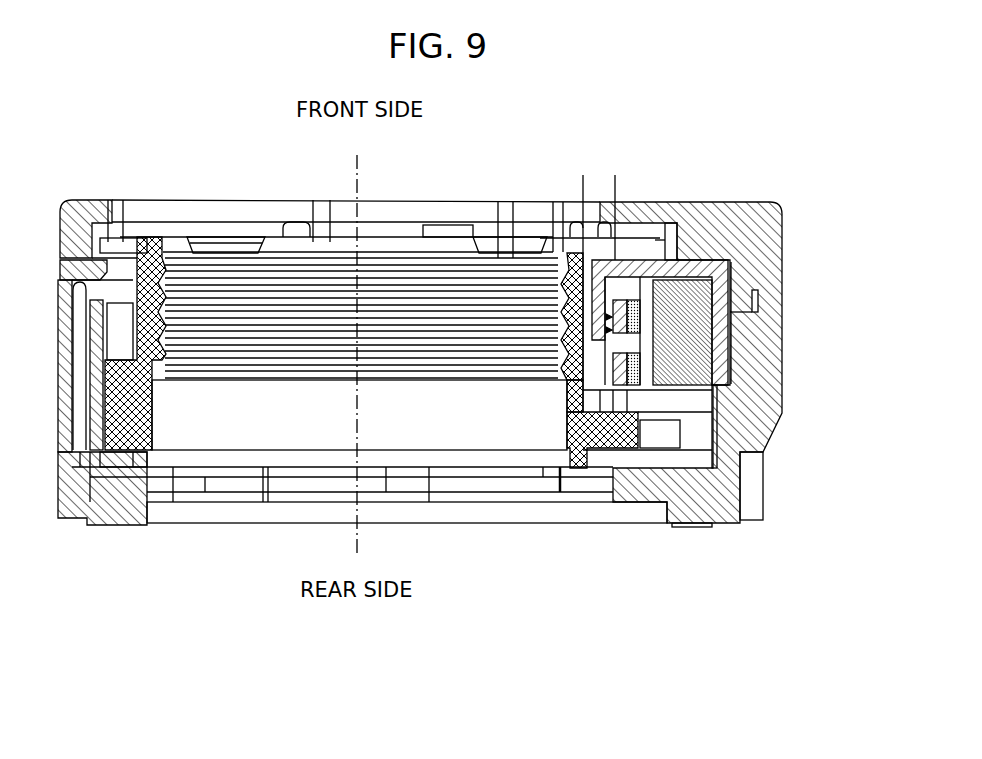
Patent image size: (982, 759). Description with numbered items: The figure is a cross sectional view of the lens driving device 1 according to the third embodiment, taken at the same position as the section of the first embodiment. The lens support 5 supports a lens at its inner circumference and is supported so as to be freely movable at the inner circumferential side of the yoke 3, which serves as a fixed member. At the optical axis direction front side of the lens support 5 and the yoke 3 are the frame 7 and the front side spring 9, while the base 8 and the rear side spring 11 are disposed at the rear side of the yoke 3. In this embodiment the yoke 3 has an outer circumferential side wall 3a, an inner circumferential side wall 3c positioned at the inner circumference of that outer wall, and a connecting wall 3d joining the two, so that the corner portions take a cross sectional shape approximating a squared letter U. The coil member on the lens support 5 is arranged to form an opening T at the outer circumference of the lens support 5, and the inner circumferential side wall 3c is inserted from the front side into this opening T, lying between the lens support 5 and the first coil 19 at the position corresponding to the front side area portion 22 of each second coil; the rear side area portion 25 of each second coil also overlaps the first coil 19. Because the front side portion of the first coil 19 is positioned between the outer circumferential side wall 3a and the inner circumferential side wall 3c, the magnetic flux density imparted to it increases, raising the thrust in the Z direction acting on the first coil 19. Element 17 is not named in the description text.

The lens driving device 1 is at (742, 154).
The yoke 3 is at (702, 242).
The outer circumferential side wall 3a is at (732, 370).
The inner circumferential side wall 3c is at (560, 272).
The connecting wall 3d is at (657, 242).
The lens support 5 is at (566, 428).
The frame 7 is at (757, 208).
The base 8 is at (668, 512).
The front side spring 9 is at (218, 240).
The rear side spring 11 is at (140, 455).
The magnet 17 is at (690, 335).
The first coil 19 is at (568, 400).
The front side area portion 22 is at (640, 310).
The rear side area portion 25 is at (716, 410).
The opening T is at (645, 181).